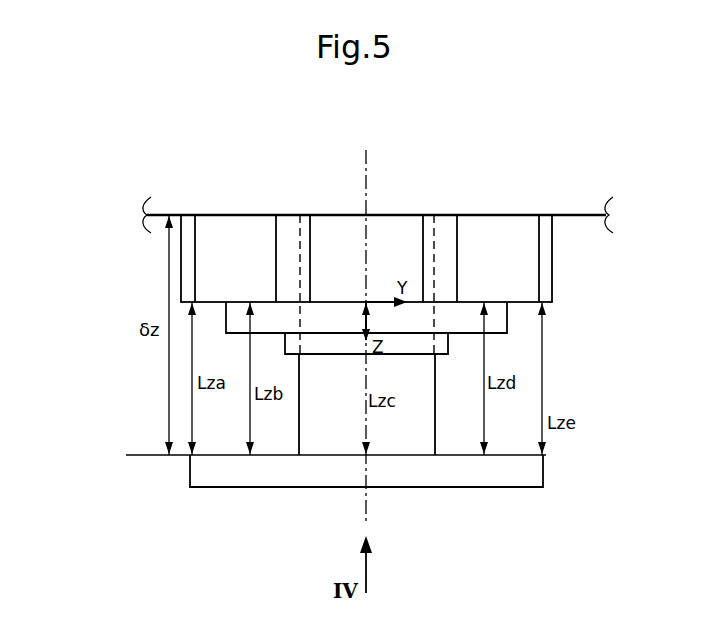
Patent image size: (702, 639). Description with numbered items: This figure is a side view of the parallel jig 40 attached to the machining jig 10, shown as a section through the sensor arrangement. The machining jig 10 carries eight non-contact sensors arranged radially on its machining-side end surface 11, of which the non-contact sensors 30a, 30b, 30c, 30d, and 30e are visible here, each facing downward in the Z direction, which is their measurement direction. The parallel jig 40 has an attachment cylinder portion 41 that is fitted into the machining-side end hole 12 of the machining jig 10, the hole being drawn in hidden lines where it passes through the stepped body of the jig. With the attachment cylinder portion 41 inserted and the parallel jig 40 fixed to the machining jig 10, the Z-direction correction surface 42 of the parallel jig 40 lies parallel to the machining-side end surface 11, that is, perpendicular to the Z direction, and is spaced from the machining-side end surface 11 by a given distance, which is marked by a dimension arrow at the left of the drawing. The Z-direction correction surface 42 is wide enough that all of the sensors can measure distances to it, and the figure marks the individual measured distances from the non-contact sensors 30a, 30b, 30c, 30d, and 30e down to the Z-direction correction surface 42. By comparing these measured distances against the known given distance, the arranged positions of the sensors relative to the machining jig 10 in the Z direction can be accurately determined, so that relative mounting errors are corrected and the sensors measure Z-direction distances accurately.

The machining jig 10 is at (155, 176).
The machining-side end surface 11 is at (160, 217).
The machining-side end hole 12 is at (432, 258).
The non-contact sensor 30a is at (190, 228).
The non-contact sensor 30b is at (248, 238).
The non-contact sensor 30c is at (337, 238).
The non-contact sensor 30d is at (497, 238).
The non-contact sensor 30e is at (552, 270).
The parallel jig 40 is at (557, 470).
The attachment cylinder portion 41 is at (435, 371).
The Z-direction correction surface 42 is at (457, 455).